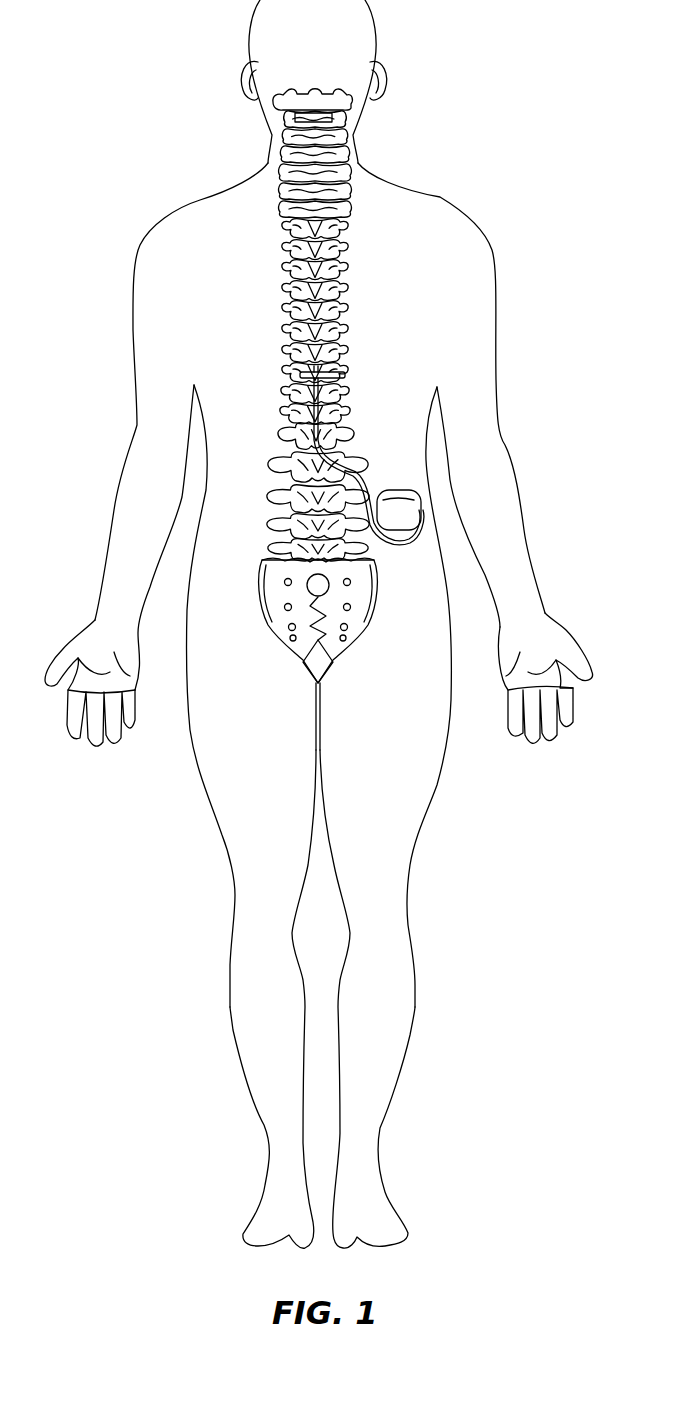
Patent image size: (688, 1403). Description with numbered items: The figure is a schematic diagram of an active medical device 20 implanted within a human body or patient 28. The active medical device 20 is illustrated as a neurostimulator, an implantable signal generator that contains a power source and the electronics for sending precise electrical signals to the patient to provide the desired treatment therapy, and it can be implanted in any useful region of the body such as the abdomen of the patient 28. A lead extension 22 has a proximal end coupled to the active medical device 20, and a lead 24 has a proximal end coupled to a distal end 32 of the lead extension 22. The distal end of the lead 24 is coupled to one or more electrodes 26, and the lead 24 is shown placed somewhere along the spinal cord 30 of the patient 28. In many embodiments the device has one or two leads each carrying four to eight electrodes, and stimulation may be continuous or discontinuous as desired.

The active medical device 20 is at (398, 510).
The lead extension 22 is at (413, 543).
The lead 24 is at (348, 437).
The electrodes 26 is at (345, 375).
The patient 28 is at (440, 197).
The spinal cord 30 is at (416, 386).
The distal end of the lead extension 32 is at (362, 472).